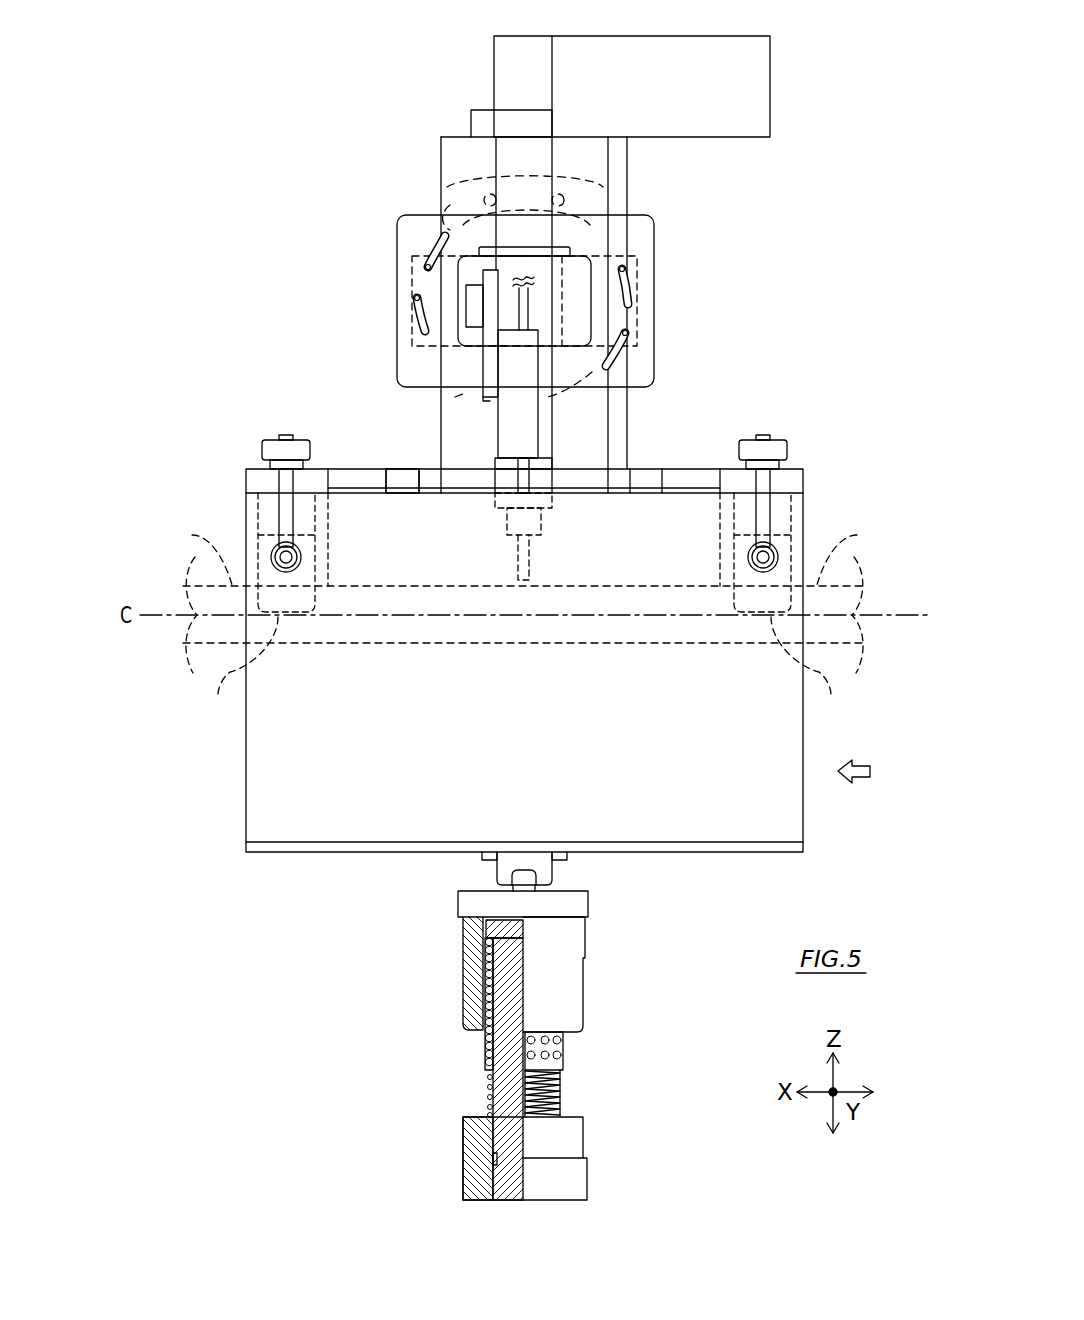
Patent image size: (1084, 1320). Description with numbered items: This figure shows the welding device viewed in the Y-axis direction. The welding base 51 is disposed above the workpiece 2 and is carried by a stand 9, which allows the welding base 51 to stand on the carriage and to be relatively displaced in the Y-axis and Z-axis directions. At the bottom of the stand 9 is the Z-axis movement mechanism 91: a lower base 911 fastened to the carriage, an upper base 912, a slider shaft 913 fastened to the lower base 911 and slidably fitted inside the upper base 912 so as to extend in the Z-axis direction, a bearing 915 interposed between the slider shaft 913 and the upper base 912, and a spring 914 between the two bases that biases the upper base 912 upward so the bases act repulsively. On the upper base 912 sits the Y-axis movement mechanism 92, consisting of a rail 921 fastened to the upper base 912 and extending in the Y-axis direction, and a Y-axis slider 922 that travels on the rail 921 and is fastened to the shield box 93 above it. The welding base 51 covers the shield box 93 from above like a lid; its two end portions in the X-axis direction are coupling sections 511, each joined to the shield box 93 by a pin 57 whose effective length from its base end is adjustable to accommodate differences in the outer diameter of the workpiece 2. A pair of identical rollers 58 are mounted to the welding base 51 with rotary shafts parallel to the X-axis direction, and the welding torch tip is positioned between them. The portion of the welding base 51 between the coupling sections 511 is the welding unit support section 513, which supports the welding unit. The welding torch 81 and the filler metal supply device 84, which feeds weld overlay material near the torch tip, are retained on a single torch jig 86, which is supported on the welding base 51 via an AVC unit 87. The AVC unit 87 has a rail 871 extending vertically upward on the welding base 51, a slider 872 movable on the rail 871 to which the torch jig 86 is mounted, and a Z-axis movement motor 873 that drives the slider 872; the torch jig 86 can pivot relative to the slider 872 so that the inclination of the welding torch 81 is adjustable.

The AVC unit 87 is at (388, 138).
The rail 871 is at (440, 137).
The slider 872 is at (395, 230).
The Z-axis movement motor 873 is at (772, 122).
The torch jig 86 is at (592, 317).
The filler metal supply device 84 is at (542, 427).
The welding torch 81 is at (555, 460).
The shield box 93 is at (243, 825).
The welding base 51 is at (703, 467).
The welding unit support section 513 is at (420, 469).
The coupling sections 511 is at (246, 469).
The pin 57 is at (278, 515).
The rollers 58 is at (524, 652).
The workpiece 2 is at (517, 597).
The stand 9 is at (862, 771).
The Y-axis slider 922 is at (500, 862).
The rail 921 is at (500, 885).
The Y-axis movement mechanism 92 is at (583, 873).
The upper base 912 is at (463, 995).
The bearing 915 is at (483, 1040).
The slider shaft 913 is at (485, 1095).
The spring 914 is at (562, 1090).
The lower base 911 is at (463, 1168).
The Z-axis movement mechanism 91 is at (596, 1035).